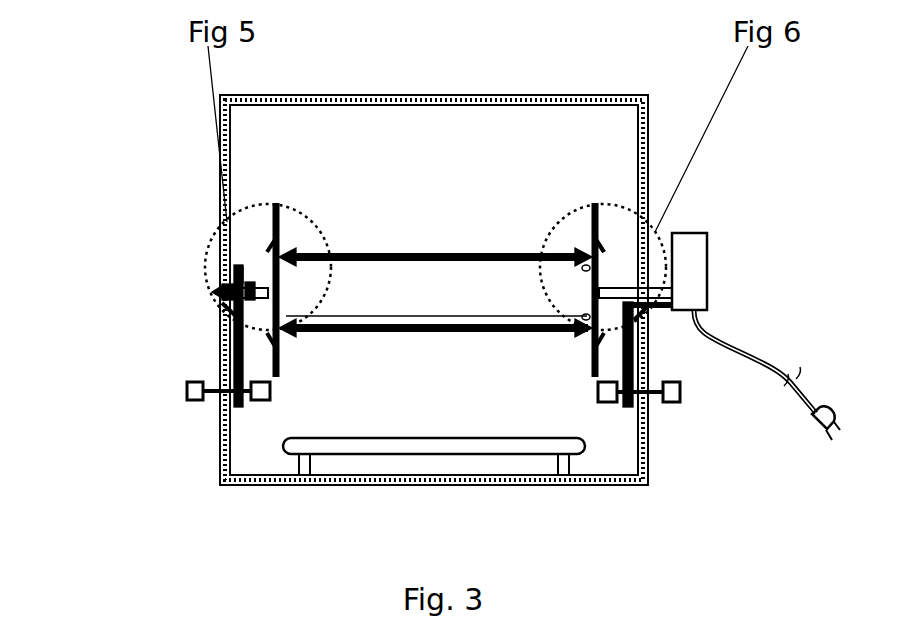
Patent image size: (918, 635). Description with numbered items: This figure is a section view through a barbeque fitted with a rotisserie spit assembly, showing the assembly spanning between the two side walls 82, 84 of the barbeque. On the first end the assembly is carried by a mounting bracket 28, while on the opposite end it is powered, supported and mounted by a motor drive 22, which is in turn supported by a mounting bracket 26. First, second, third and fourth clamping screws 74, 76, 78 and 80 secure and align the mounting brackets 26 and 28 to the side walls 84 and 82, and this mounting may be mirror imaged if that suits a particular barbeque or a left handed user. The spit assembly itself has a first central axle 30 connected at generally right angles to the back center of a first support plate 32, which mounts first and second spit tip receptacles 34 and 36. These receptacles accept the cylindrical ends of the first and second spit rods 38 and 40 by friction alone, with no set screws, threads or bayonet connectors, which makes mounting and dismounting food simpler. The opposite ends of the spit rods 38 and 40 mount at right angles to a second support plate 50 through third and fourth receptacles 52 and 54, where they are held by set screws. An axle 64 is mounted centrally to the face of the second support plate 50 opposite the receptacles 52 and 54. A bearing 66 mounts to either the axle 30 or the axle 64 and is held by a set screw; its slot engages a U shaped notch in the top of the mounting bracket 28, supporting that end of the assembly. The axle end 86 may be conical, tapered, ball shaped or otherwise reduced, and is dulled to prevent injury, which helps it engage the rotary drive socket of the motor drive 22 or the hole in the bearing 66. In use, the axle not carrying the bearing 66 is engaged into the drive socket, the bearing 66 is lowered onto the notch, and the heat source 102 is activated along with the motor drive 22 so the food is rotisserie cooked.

The motor drive 22 is at (688, 247).
The mounting bracket 26 is at (626, 405).
The mounting bracket 28 is at (222, 312).
The first central axle 30 is at (224, 287).
The first support plate 32 is at (279, 205).
The first spit tip receptacle 34 is at (284, 246).
The second spit tip receptacle 36 is at (284, 312).
The first spit rod 38 is at (353, 318).
The second spit rod 40 is at (437, 253).
The second support plate 50 is at (600, 203).
The third receptacle 52 is at (588, 248).
The fourth receptacle 54 is at (578, 254).
The axle 64 is at (620, 290).
The bearing 66 is at (240, 272).
The first clamping screw 74 is at (190, 397).
The second clamping screw 76 is at (258, 402).
The third clamping screw 78 is at (608, 402).
The fourth clamping screw 80 is at (677, 402).
The side wall 82 is at (222, 450).
The side wall 84 is at (645, 432).
The axle end 86 is at (215, 291).
The heat source 102 is at (342, 450).